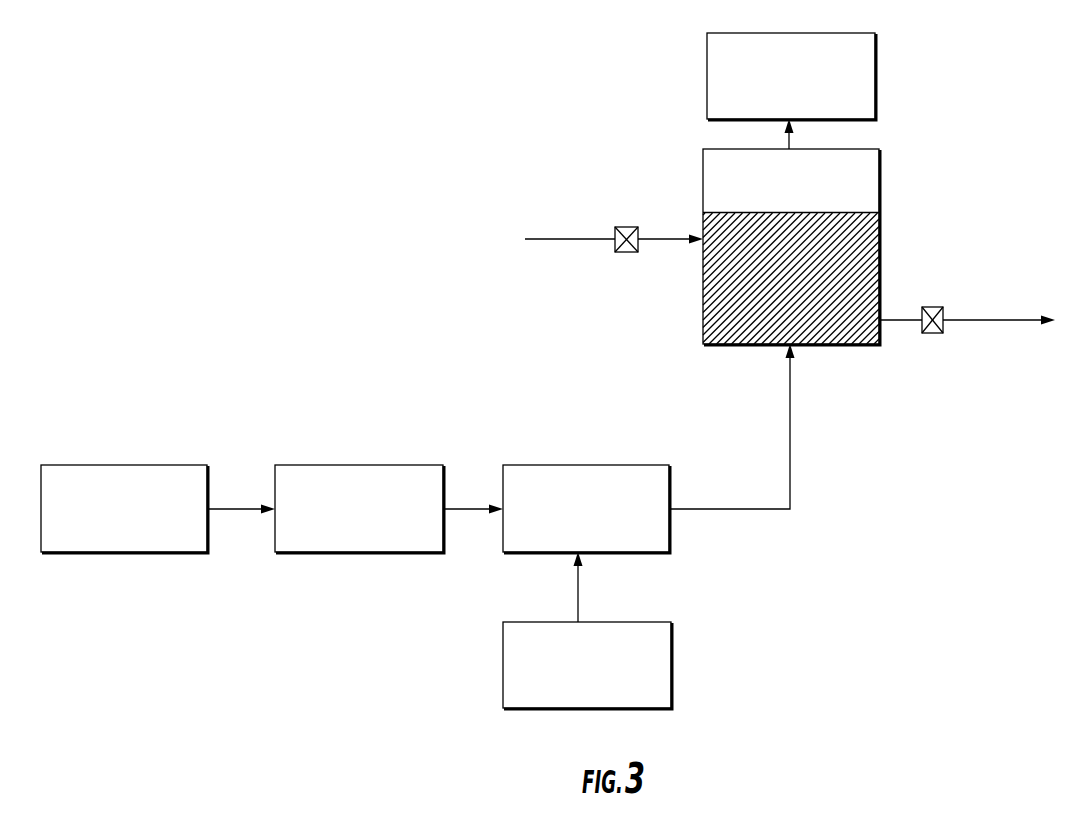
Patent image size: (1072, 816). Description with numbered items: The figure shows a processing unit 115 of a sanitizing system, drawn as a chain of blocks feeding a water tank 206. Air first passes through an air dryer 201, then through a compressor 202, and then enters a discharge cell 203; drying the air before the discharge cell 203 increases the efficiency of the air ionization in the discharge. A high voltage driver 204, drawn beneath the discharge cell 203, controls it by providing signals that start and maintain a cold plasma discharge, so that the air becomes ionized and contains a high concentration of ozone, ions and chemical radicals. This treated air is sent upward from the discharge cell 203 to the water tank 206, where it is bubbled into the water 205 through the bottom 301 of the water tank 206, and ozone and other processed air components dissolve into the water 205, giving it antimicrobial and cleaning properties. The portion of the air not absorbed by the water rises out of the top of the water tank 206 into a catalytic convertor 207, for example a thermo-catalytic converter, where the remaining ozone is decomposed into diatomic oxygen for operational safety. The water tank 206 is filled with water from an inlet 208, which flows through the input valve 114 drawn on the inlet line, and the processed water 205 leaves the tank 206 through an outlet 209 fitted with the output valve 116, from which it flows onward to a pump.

The air dryer 201 is at (109, 523).
The compressor 202 is at (344, 523).
The discharge cell 203 is at (571, 523).
The high voltage driver 204 is at (571, 679).
The water 205 is at (773, 295).
The water tank 206 is at (879, 201).
The catalytic convertor 207 is at (776, 87).
The inlet 208 is at (559, 239).
The outlet 209 is at (1010, 320).
The input valve 114 is at (617, 252).
The output valve 116 is at (943, 307).
The processing unit 115 is at (776, 579).
The bottom of water tank 301 is at (798, 349).